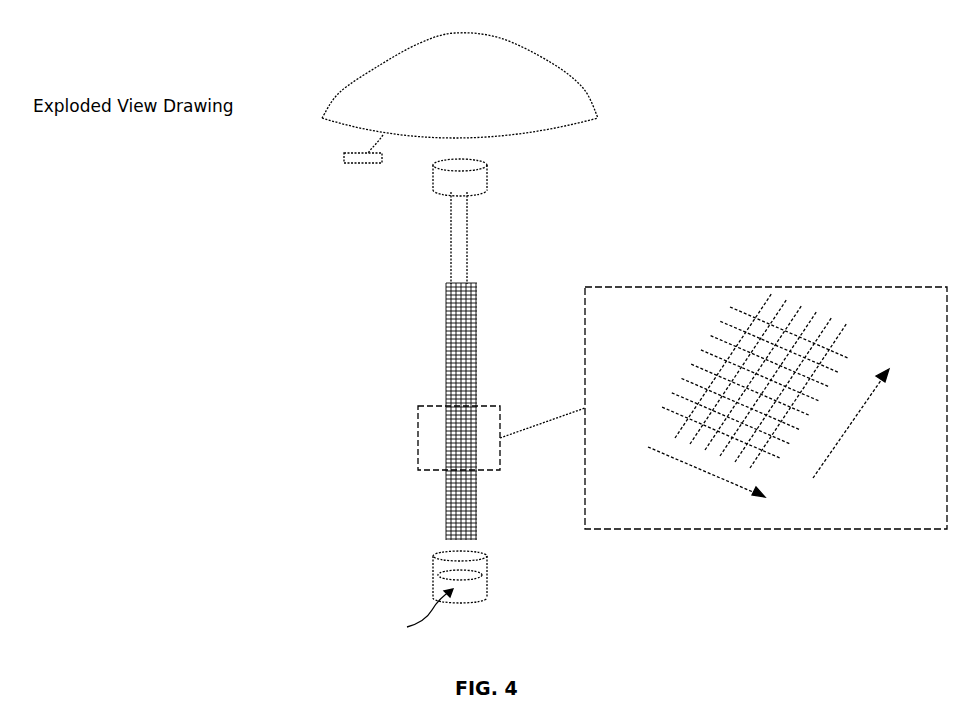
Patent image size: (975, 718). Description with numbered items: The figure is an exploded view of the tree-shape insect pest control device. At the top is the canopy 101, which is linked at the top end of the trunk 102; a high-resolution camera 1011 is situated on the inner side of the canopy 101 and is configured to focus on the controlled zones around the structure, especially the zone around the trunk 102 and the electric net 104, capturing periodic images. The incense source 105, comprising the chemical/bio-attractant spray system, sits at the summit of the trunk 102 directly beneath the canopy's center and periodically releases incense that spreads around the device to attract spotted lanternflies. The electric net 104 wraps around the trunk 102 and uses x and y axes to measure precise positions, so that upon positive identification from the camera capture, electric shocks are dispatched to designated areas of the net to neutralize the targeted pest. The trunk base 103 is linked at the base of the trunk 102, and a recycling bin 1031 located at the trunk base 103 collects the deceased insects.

The canopy 101 is at (503, 80).
The camera 1011 is at (344, 160).
The incense source 105 is at (473, 185).
The trunk 102 is at (457, 236).
The electric net 104 is at (445, 311).
The trunk base 103 is at (483, 562).
The recycling bin 1031 is at (472, 590).